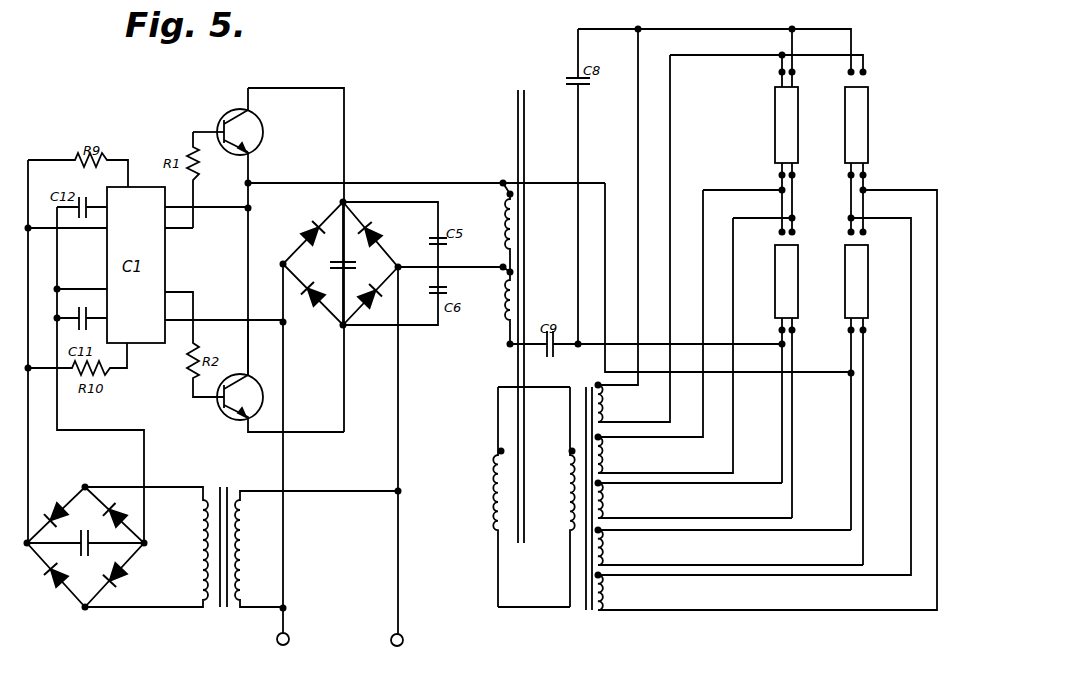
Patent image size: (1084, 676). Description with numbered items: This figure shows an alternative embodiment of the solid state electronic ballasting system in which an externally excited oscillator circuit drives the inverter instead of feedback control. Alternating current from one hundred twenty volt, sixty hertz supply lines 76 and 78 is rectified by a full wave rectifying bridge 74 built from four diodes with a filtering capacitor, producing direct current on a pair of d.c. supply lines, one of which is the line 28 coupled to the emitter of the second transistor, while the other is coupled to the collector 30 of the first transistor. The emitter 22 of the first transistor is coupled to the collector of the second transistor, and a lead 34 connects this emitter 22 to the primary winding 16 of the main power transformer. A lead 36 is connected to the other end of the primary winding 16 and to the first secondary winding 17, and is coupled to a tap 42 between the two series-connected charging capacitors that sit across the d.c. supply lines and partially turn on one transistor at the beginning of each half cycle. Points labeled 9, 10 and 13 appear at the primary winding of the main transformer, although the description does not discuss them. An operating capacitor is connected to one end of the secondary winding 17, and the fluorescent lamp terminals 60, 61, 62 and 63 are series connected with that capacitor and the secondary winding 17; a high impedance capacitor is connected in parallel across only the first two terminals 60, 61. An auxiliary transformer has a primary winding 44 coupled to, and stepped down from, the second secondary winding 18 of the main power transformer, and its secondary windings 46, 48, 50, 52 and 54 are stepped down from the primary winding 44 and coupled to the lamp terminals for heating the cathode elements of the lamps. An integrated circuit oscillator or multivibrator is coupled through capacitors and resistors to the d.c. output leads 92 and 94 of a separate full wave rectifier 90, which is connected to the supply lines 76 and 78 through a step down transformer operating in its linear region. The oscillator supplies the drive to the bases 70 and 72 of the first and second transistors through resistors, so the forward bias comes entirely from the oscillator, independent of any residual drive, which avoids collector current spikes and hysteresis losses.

The primary winding terminal 9 is at (501, 192).
The primary winding center tap terminal 10 is at (499, 267).
The primary winding terminal 13 is at (500, 347).
The primary winding 16 is at (500, 233).
The first secondary winding 17 is at (500, 320).
The second secondary winding 18 is at (494, 512).
The emitter 22 is at (251, 170).
The d.c. supply line 28 is at (329, 299).
The collector 30 is at (248, 98).
The lead 34 is at (403, 183).
The lead 36 is at (475, 270).
The tap 42 is at (420, 246).
The primary winding 44 is at (565, 515).
The secondary winding 46 is at (608, 404).
The secondary winding 48 is at (608, 455).
The secondary winding 50 is at (608, 502).
The secondary winding 52 is at (608, 548).
The secondary winding 54 is at (608, 594).
The lamp terminal 60 is at (770, 78).
The lamp terminal 61 is at (770, 236).
The lamp terminal 62 is at (876, 78).
The lamp terminal 63 is at (874, 236).
The base 70 is at (195, 131).
The base 72 is at (193, 397).
The full wave rectifying bridge 74 is at (305, 207).
The a.c. supply line 76 is at (285, 625).
The a.c. supply line 78 is at (400, 622).
The full wave rectifier 90 is at (56, 597).
The d.c. output lead 92 is at (28, 437).
The d.c. output lead 94 is at (57, 418).